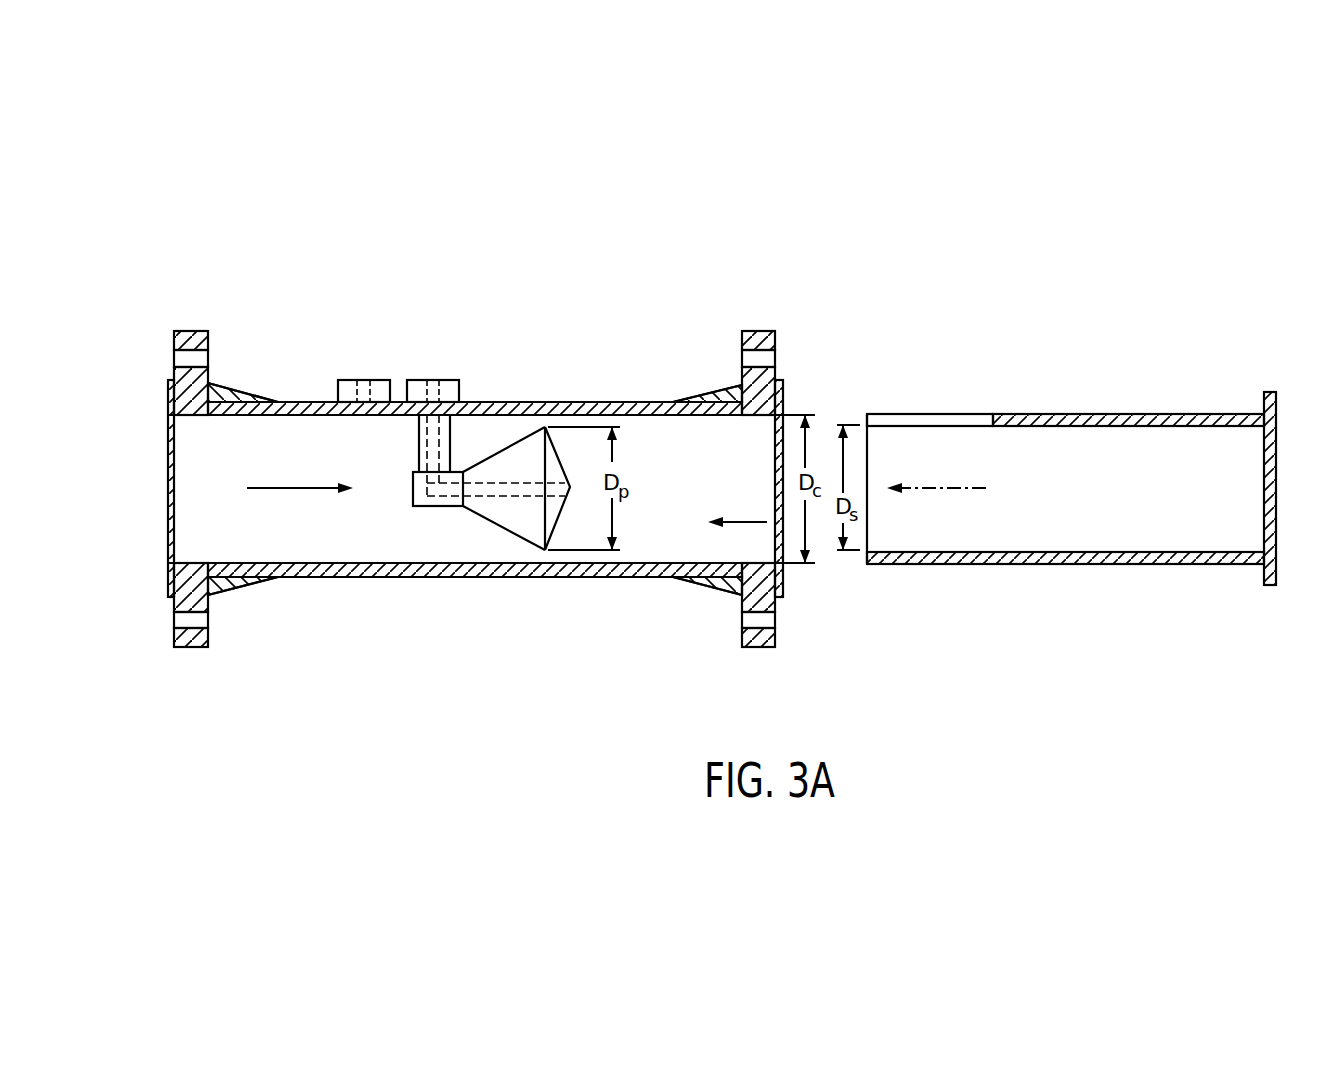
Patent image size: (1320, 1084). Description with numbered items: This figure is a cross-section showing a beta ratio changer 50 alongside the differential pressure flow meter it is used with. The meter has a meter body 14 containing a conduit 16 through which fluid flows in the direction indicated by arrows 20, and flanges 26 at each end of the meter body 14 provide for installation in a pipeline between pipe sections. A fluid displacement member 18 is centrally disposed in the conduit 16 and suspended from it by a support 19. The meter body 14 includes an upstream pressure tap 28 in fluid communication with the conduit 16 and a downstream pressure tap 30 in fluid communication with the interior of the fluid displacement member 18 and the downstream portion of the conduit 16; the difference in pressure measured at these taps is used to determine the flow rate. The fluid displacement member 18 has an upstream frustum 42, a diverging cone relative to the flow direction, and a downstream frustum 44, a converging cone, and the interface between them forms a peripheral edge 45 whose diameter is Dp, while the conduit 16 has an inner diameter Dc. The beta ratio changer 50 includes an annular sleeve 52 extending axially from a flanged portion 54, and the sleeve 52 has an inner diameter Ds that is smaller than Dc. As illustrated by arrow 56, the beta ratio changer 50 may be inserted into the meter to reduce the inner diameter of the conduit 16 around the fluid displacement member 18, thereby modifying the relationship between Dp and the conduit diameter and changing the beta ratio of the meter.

The meter body 14 is at (508, 577).
The conduit 16 is at (767, 522).
The fluid displacement member 18 is at (546, 486).
The support 19 is at (418, 445).
The arrows indicating fluid flow direction 20 is at (296, 488).
The flanges 26 is at (195, 331).
The upstream pressure tap 28 is at (338, 395).
The downstream pressure tap 30 is at (460, 392).
The upstream frustum 42 is at (479, 524).
The downstream frustum 44 is at (570, 458).
The peripheral edge 45 is at (544, 551).
The beta ratio changer 50 is at (1071, 294).
The annular sleeve 52 is at (1090, 414).
The flanged portion 54 is at (1262, 402).
The arrow indicating insertion 56 is at (942, 489).